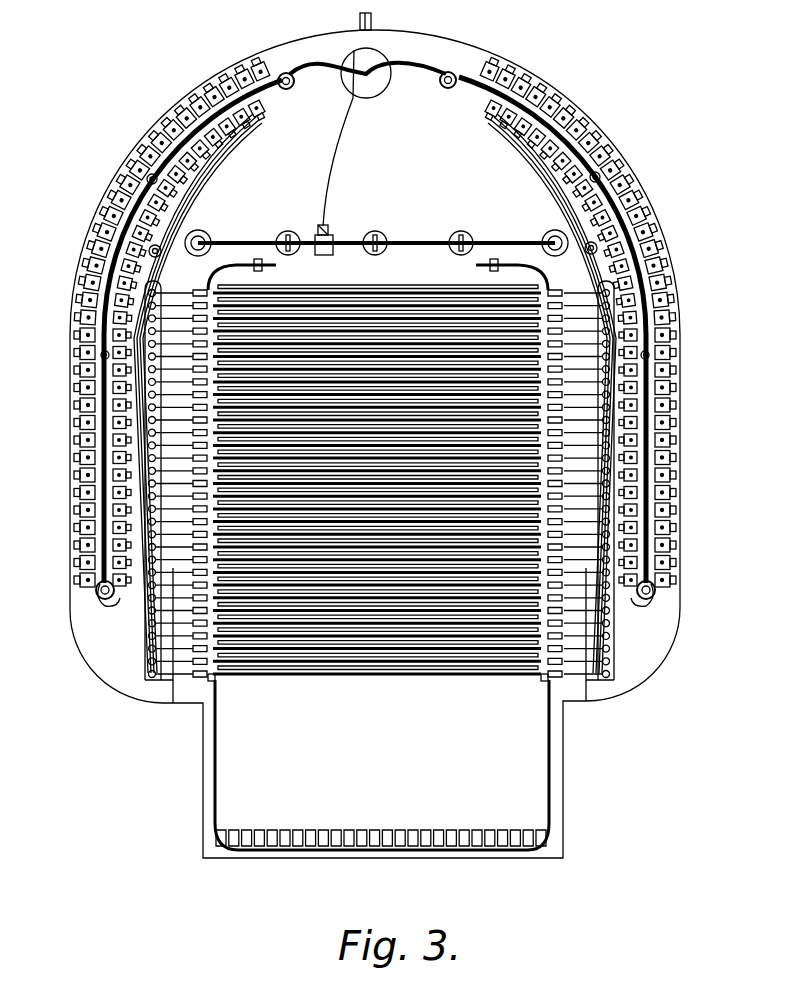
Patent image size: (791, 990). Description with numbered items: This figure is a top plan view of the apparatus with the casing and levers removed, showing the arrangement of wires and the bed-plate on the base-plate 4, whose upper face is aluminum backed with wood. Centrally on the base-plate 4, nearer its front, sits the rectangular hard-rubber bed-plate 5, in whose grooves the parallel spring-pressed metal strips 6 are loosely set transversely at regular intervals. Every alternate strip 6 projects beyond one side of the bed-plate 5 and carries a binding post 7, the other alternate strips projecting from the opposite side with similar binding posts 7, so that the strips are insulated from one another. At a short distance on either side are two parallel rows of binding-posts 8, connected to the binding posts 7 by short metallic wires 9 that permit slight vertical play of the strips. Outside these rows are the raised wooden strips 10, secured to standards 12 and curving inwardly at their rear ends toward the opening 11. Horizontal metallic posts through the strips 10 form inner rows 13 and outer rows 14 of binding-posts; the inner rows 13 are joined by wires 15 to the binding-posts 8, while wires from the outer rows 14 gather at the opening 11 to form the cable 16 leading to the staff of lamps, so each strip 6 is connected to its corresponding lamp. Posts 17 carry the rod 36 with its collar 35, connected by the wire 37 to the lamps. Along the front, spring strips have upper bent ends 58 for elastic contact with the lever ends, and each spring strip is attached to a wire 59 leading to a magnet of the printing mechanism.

The base-plate 4 is at (84, 636).
The bed-plate 5 is at (230, 668).
The spring-pressed metal strips 6 is at (320, 282).
The binding post 7 is at (190, 282).
The binding-posts 8 is at (142, 678).
The short metallic wires 9 is at (163, 680).
The strips 10 is at (98, 556).
The opening 11 is at (368, 73).
The standards 12 is at (284, 81).
The inner rows of binding-posts 13 is at (113, 590).
The outer rows of binding-posts 14 is at (68, 458).
The wires 15 is at (214, 140).
The cable 16 is at (363, 13).
The posts 17 is at (196, 226).
The collar 35 is at (326, 230).
The rod 36 is at (305, 228).
The wire 37 is at (322, 166).
The bent ends 58 is at (280, 820).
The wire 59 is at (260, 258).